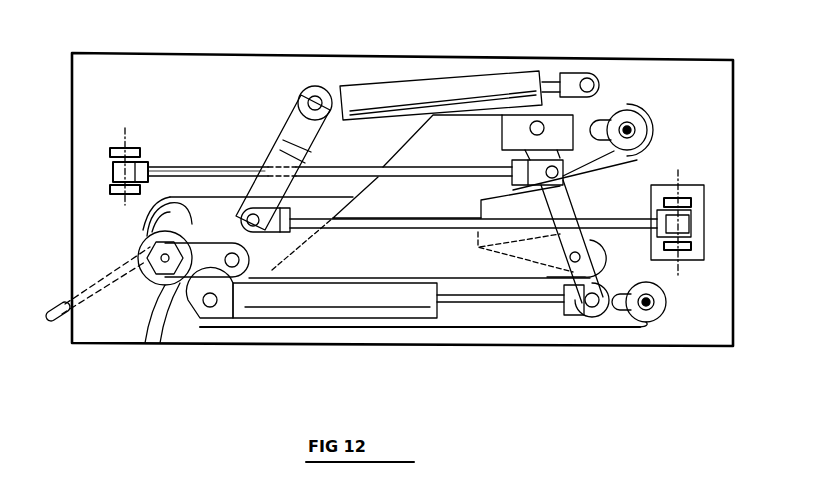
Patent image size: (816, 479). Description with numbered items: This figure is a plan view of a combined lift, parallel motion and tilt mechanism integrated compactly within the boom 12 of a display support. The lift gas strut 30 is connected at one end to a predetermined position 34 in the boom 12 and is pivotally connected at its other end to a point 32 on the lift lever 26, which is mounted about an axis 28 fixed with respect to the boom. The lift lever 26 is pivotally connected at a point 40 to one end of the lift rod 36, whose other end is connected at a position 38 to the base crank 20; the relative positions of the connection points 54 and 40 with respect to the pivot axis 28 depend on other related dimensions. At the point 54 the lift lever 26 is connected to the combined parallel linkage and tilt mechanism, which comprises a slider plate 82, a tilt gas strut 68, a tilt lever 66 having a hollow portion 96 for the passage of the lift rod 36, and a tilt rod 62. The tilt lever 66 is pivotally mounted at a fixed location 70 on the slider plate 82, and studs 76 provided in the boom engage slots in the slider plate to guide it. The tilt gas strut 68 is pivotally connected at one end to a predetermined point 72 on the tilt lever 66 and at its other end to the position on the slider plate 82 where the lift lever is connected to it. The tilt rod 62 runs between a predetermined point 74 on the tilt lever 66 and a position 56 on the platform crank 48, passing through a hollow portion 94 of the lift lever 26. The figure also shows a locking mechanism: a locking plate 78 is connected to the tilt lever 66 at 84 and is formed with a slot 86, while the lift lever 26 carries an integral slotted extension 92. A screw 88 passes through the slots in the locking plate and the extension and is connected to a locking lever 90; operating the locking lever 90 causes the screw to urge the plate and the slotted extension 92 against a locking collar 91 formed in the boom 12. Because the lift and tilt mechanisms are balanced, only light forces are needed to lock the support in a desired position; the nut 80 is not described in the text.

The boom 12 is at (672, 346).
The base crank 20 is at (694, 246).
The lift lever 26 is at (292, 115).
The axis 28 is at (240, 260).
The lift gas strut 30 is at (385, 85).
The point 32 is at (322, 90).
The position 34 is at (588, 78).
The lift rod 36 is at (604, 223).
The position 38 is at (681, 180).
The point 40 is at (248, 218).
The platform crank 48 is at (112, 190).
The point 54 is at (212, 320).
The position 56 is at (113, 150).
The tilt rod 62 is at (168, 168).
The tilt lever 66 is at (548, 194).
The tilt gas strut 68 is at (370, 307).
The fixed location 70 is at (530, 129).
The point 72 is at (592, 312).
The point 74 is at (564, 172).
The studs 76 is at (640, 130).
The locking plate 78 is at (489, 268).
The hex nut 80 is at (140, 250).
The slider plate 82 is at (415, 332).
The connection 84 is at (582, 258).
The slot 86 is at (156, 345).
The screw 88 is at (140, 265).
The locking lever 90 is at (58, 322).
The locking collar 91 is at (150, 320).
The slotted extension 92 is at (150, 222).
The hollow portion 94 is at (268, 154).
The hollow portion 96 is at (577, 208).